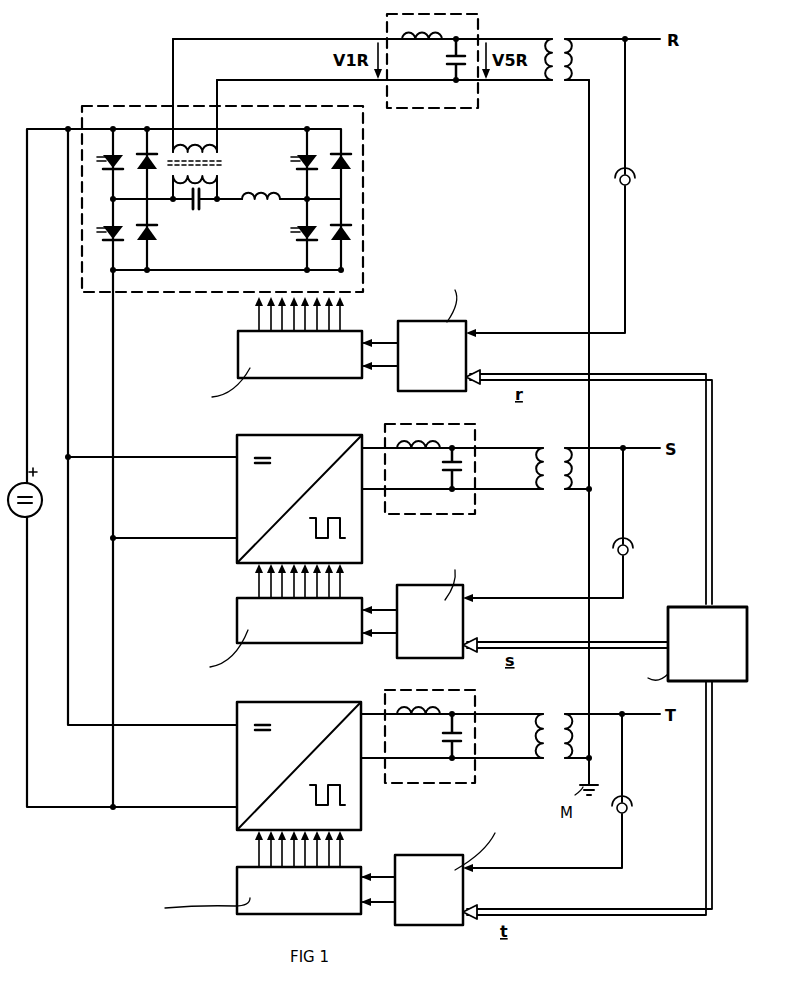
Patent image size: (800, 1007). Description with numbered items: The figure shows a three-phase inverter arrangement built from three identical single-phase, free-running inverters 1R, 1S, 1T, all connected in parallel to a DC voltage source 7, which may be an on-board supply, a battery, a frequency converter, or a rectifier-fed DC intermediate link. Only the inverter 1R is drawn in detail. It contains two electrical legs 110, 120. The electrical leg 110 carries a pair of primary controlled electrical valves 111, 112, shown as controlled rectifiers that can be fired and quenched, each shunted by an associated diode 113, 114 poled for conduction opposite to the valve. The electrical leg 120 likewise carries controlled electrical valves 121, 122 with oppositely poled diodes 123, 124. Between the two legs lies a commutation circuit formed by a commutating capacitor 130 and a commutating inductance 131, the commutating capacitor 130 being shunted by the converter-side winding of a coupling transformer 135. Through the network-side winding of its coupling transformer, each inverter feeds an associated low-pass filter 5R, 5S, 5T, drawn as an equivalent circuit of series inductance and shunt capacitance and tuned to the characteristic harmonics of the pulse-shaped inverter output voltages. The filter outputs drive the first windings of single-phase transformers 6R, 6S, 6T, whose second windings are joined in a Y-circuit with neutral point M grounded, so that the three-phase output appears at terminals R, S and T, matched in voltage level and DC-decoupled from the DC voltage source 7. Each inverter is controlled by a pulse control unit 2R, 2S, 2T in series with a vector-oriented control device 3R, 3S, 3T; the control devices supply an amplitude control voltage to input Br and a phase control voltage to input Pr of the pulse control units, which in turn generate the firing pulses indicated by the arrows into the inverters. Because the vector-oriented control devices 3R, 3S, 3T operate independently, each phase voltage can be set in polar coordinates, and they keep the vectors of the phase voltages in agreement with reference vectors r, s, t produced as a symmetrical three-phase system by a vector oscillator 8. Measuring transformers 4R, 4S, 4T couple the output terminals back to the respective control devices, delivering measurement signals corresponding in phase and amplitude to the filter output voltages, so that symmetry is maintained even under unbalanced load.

The single-phase free-running inverter 1R is at (363, 215).
The single-phase free-running inverter 1S is at (362, 525).
The single-phase free-running inverter 1T is at (361, 795).
The pulse control unit 2R is at (238, 353).
The pulse control unit 2S is at (237, 620).
The pulse control unit 2T is at (237, 888).
The vector-oriented control device 3R is at (417, 321).
The vector-oriented control device 3S is at (413, 585).
The vector-oriented control device 3T is at (410, 855).
The measuring transformer 4R is at (630, 184).
The measuring transformer 4S is at (628, 554).
The measuring transformer 4T is at (627, 812).
The low-pass filter 5R is at (432, 109).
The low-pass filter 5S is at (440, 515).
The low-pass filter 5T is at (440, 784).
The single-phase transformer 6R is at (558, 84).
The single-phase transformer 6S is at (553, 493).
The single-phase transformer 6T is at (553, 762).
The DC voltage source 7 is at (40, 513).
The vector oscillator 8 is at (671, 651).
The electrical leg 110 is at (176, 202).
The primary controlled electrical valve 111 is at (100, 158).
The primary controlled electrical valve 112 is at (100, 229).
The diode 113 is at (140, 170).
The diode 114 is at (140, 242).
The electrical leg 120 is at (290, 205).
The primary controlled electrical valve 121 is at (300, 155).
The primary controlled electrical valve 122 is at (312, 232).
The diode 123 is at (348, 165).
The diode 124 is at (345, 236).
The commutating capacitor 130 is at (200, 205).
The commutating inductance 131 is at (247, 204).
The coupling transformer 135 is at (223, 172).